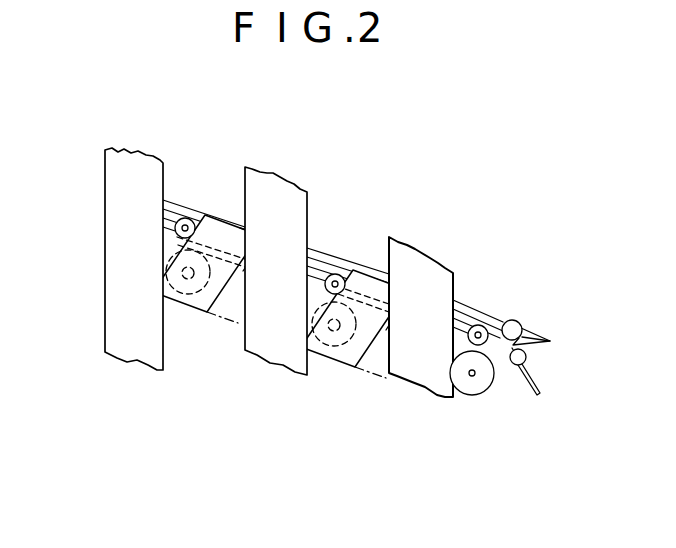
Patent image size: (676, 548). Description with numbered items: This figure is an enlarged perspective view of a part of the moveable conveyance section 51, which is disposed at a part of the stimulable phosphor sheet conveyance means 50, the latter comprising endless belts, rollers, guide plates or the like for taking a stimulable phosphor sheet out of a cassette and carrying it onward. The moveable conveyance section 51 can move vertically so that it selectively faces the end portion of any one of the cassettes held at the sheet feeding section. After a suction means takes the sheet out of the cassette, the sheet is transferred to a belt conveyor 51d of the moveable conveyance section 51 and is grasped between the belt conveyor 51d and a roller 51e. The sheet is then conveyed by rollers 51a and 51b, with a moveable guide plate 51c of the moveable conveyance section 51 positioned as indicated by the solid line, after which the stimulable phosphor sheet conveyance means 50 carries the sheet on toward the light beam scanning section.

The stimulable phosphor sheet conveyance means 50 is at (118, 208).
The moveable conveyance section 51 is at (216, 142).
The roller 51a is at (188, 296).
The roller 51b is at (179, 218).
The moveable guide plate 51c is at (153, 293).
The belt conveyor 51d is at (495, 382).
The roller 51e is at (518, 325).